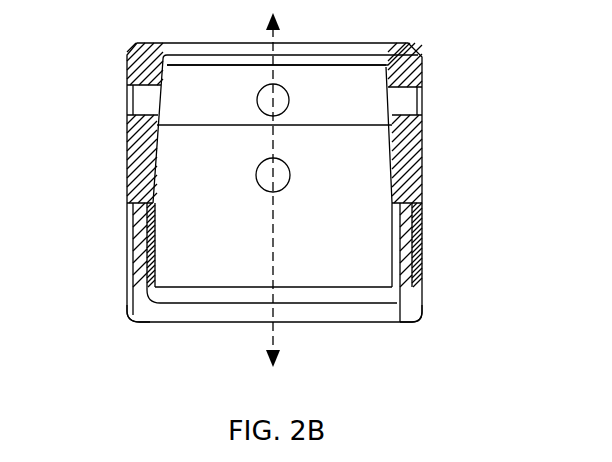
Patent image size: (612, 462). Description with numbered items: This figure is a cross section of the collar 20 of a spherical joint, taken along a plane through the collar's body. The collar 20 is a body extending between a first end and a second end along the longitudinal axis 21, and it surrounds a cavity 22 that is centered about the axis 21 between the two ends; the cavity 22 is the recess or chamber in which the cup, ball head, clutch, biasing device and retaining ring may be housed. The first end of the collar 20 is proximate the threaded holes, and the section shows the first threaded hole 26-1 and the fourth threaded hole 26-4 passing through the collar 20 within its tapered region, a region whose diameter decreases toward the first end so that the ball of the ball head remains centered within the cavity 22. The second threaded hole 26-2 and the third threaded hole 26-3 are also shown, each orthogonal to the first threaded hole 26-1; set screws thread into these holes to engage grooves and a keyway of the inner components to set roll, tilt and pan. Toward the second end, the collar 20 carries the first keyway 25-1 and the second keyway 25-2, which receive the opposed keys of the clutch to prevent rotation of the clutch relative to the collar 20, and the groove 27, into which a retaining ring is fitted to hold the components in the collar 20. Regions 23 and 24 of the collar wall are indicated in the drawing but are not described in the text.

The collar 20 is at (440, 53).
The axis 21 is at (278, 333).
The cavity 22 is at (313, 192).
The top wall corner 23 is at (172, 58).
The side wall 24 is at (174, 163).
The first keyway 25-1 is at (147, 328).
The second keyway 25-2 is at (405, 328).
The first threaded hole 26-1 is at (130, 113).
The second threaded hole 26-2 is at (276, 104).
The third threaded hole 26-3 is at (283, 162).
The fourth threaded hole 26-4 is at (424, 119).
The groove 27 is at (163, 325).